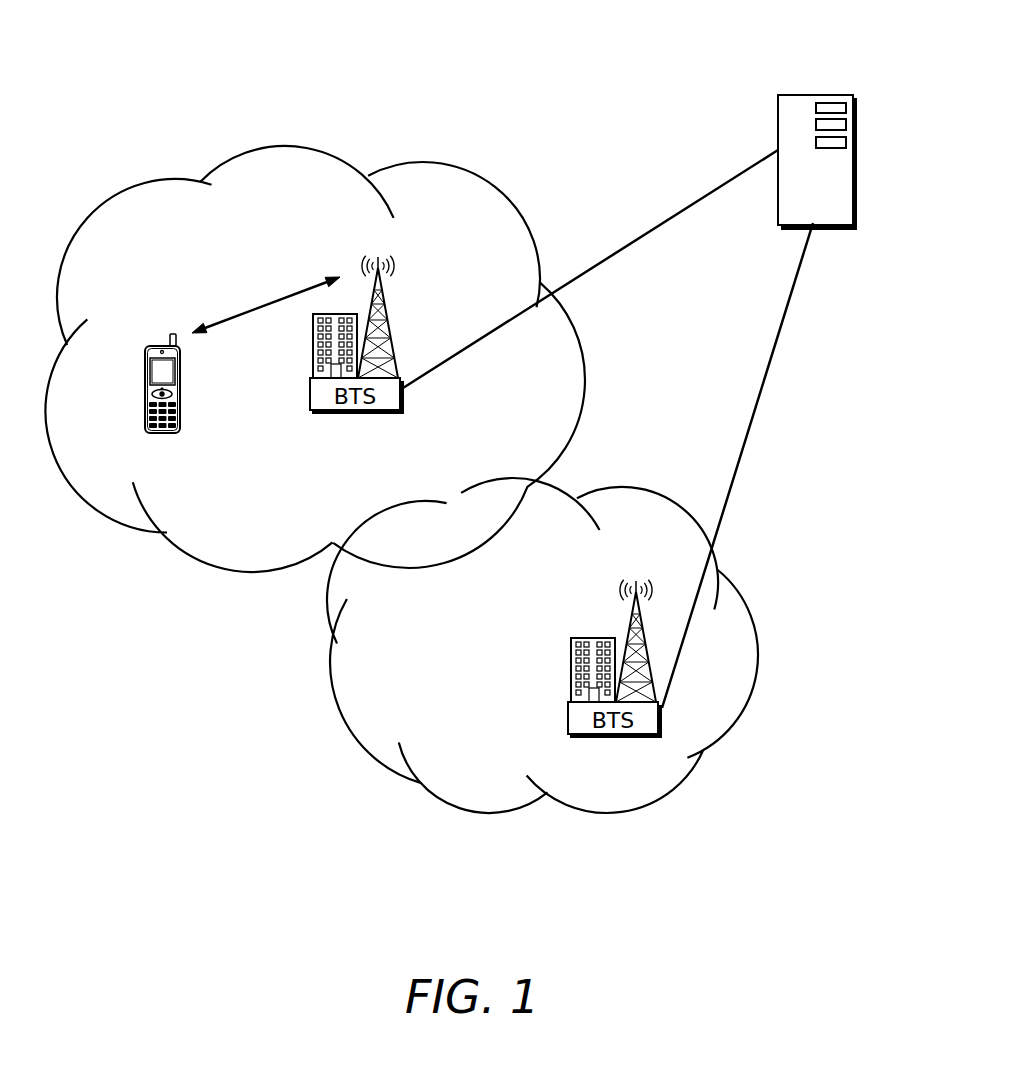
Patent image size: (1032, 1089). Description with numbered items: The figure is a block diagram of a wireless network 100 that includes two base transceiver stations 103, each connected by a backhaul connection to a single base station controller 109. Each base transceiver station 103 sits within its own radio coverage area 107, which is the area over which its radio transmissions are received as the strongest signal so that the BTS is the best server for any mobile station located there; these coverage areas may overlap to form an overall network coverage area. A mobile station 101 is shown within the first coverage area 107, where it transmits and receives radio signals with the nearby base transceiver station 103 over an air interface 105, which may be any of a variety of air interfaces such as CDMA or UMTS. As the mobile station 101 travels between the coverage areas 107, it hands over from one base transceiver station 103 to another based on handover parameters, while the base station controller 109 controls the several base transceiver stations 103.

The wireless communication system 100 is at (906, 50).
The mobile station 101 is at (144, 386).
The base transceiver station 103 is at (309, 390).
The air interface 105 is at (270, 304).
The radio coverage area 107 is at (241, 578).
The base station controller 109 is at (855, 150).